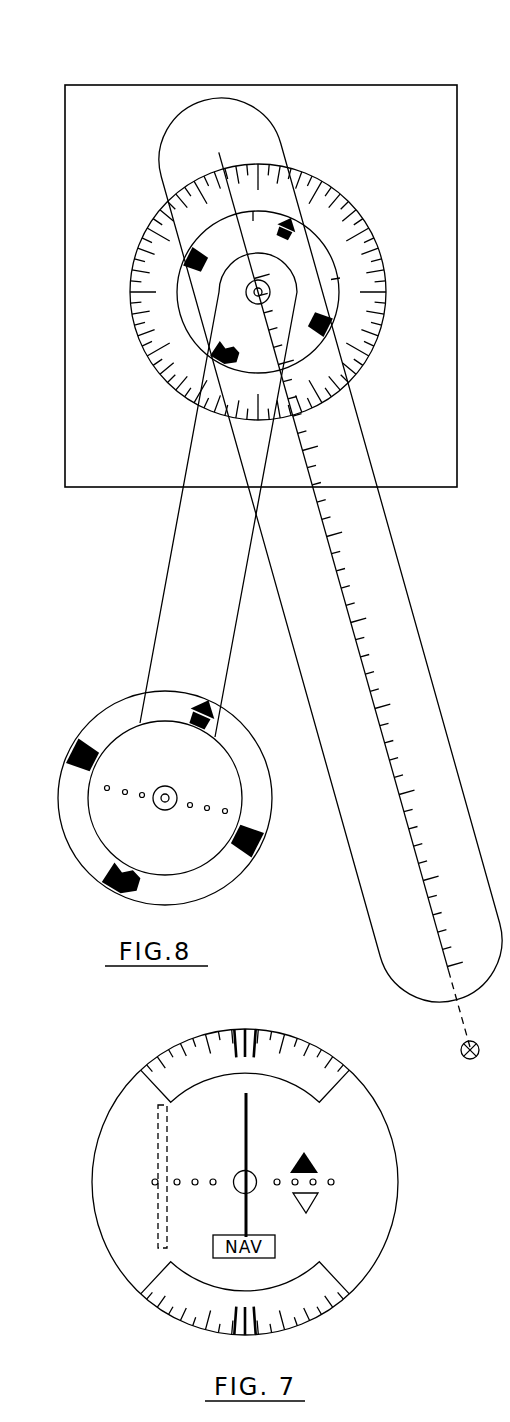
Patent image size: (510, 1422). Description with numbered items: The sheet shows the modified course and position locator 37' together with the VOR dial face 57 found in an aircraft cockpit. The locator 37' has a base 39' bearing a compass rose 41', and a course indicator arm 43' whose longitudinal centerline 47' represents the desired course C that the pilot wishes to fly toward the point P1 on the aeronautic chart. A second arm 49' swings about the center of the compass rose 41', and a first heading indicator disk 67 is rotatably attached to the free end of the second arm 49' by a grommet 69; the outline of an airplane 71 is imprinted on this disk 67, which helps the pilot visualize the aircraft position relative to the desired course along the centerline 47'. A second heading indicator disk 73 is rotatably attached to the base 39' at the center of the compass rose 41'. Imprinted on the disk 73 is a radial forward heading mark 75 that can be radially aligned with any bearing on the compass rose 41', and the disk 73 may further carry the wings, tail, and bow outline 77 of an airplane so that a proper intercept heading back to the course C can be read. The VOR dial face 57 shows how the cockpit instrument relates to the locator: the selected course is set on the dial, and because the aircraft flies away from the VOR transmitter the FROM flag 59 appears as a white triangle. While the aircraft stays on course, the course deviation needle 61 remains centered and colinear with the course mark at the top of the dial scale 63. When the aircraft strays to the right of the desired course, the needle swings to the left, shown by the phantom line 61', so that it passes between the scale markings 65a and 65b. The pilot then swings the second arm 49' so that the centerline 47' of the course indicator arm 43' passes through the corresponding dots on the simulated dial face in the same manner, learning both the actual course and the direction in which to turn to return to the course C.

In FIG. 8, the modified course and position locator 37' is at (330, 504).
In FIG. 8, the base 39' is at (261, 249).
In FIG. 8, the compass rose 41' is at (263, 250).
In FIG. 8, the course indicator arm 43' is at (379, 989).
In FIG. 8, the longitudinal centerline 47' is at (355, 561).
In FIG. 8, the second arm 49' is at (165, 733).
In FIG. 7, the VOR dial face 57 is at (282, 1006).
In FIG. 7, the FROM flag 59 is at (313, 1201).
In FIG. 7, the course deviation needle 61 is at (343, 1160).
In FIG. 7, the phantom line of CDI needle 61' is at (119, 1144).
In FIG. 7, the dial scale 63 is at (349, 1075).
In FIG. 7, the scale marking 65a is at (153, 1179).
In FIG. 7, the scale marking 65b is at (178, 1178).
In FIG. 8, the first heading indicator disk 67 is at (100, 742).
In FIG. 8, the grommet 69 is at (176, 809).
In FIG. 8, the outline of an airplane 71 is at (117, 881).
In FIG. 8, the second heading indicator disk 73 is at (343, 270).
In FIG. 8, the radial forward heading mark 75 is at (296, 219).
In FIG. 8, the wings, tail, and bow outline 77 is at (188, 257).
In FIG. 8, the course C is at (459, 1026).
In FIG. 8, the point P1 is at (461, 1050).